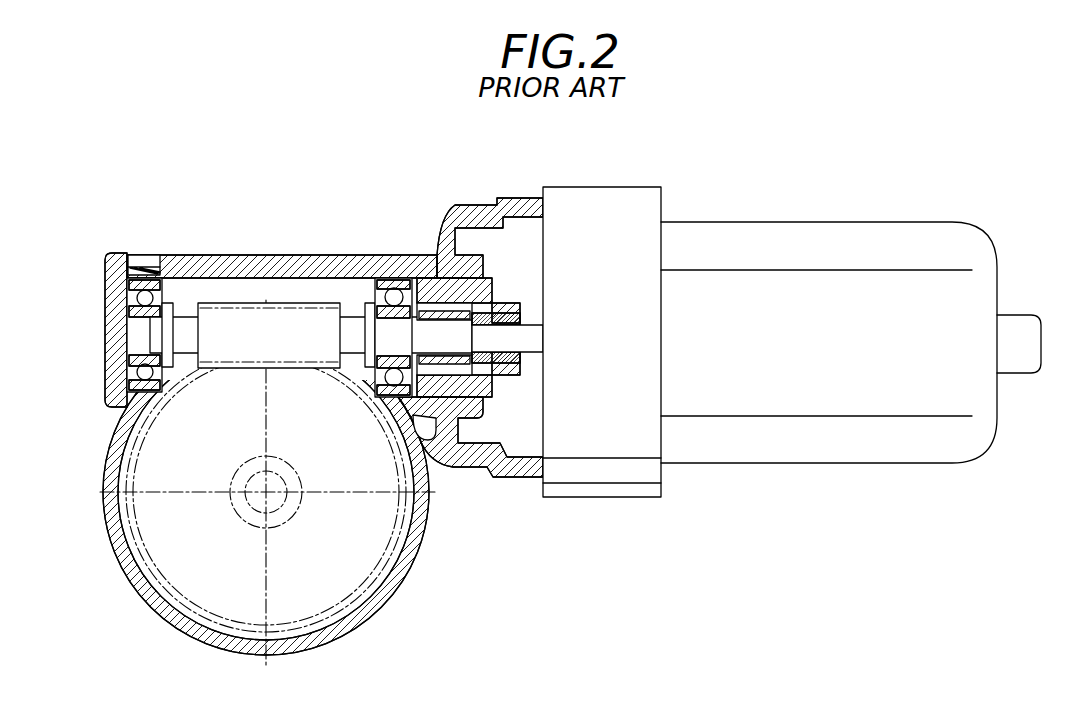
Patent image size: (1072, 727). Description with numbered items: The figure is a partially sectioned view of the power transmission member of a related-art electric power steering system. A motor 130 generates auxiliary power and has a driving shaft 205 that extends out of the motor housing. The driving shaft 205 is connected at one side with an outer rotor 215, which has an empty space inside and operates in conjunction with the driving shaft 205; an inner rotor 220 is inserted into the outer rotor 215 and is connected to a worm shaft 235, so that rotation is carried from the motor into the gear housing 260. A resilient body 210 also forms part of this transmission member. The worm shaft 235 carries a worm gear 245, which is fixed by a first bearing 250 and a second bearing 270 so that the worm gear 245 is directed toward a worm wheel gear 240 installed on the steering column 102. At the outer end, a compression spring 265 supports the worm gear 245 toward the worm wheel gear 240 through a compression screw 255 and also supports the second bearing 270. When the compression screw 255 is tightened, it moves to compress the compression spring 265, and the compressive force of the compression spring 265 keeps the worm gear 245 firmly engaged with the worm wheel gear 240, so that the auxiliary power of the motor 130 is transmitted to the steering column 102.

The steering column 102 is at (243, 478).
The motor 130 is at (753, 235).
The driving shaft 205 is at (530, 332).
The resilient body 210 is at (524, 212).
The outer rotor 215 is at (462, 303).
The inner rotor 220 is at (458, 422).
The worm shaft 235 is at (185, 318).
The worm wheel gear 240 is at (388, 562).
The worm gear 245 is at (272, 305).
The first bearing 250 is at (397, 277).
The compression screw 255 is at (142, 252).
The gear housing 260 is at (317, 258).
The compression spring 265 is at (127, 270).
The second bearing 270 is at (130, 357).